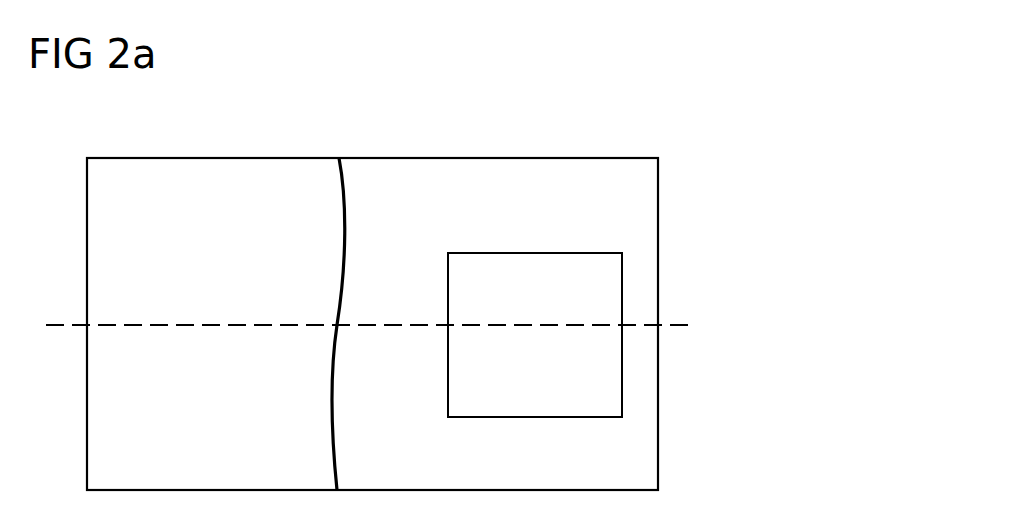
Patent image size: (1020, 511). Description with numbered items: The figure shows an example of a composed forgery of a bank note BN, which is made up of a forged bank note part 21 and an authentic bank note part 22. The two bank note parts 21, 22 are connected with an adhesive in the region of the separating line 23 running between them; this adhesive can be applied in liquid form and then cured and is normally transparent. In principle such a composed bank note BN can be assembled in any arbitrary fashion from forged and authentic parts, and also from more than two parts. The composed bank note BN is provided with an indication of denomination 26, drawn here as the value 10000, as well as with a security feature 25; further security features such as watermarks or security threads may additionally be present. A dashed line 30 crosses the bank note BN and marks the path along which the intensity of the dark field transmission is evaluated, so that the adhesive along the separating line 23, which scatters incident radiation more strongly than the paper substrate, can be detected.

The bank note BN is at (652, 118).
The forged bank note part 21 is at (212, 207).
The authentic bank note part 22 is at (564, 176).
The separating line 23 is at (336, 428).
The security feature 25 is at (533, 268).
The indication of denomination 26 is at (318, 357).
The dashed line 30 is at (58, 323).
The serial number value 10000 is at (148, 238).